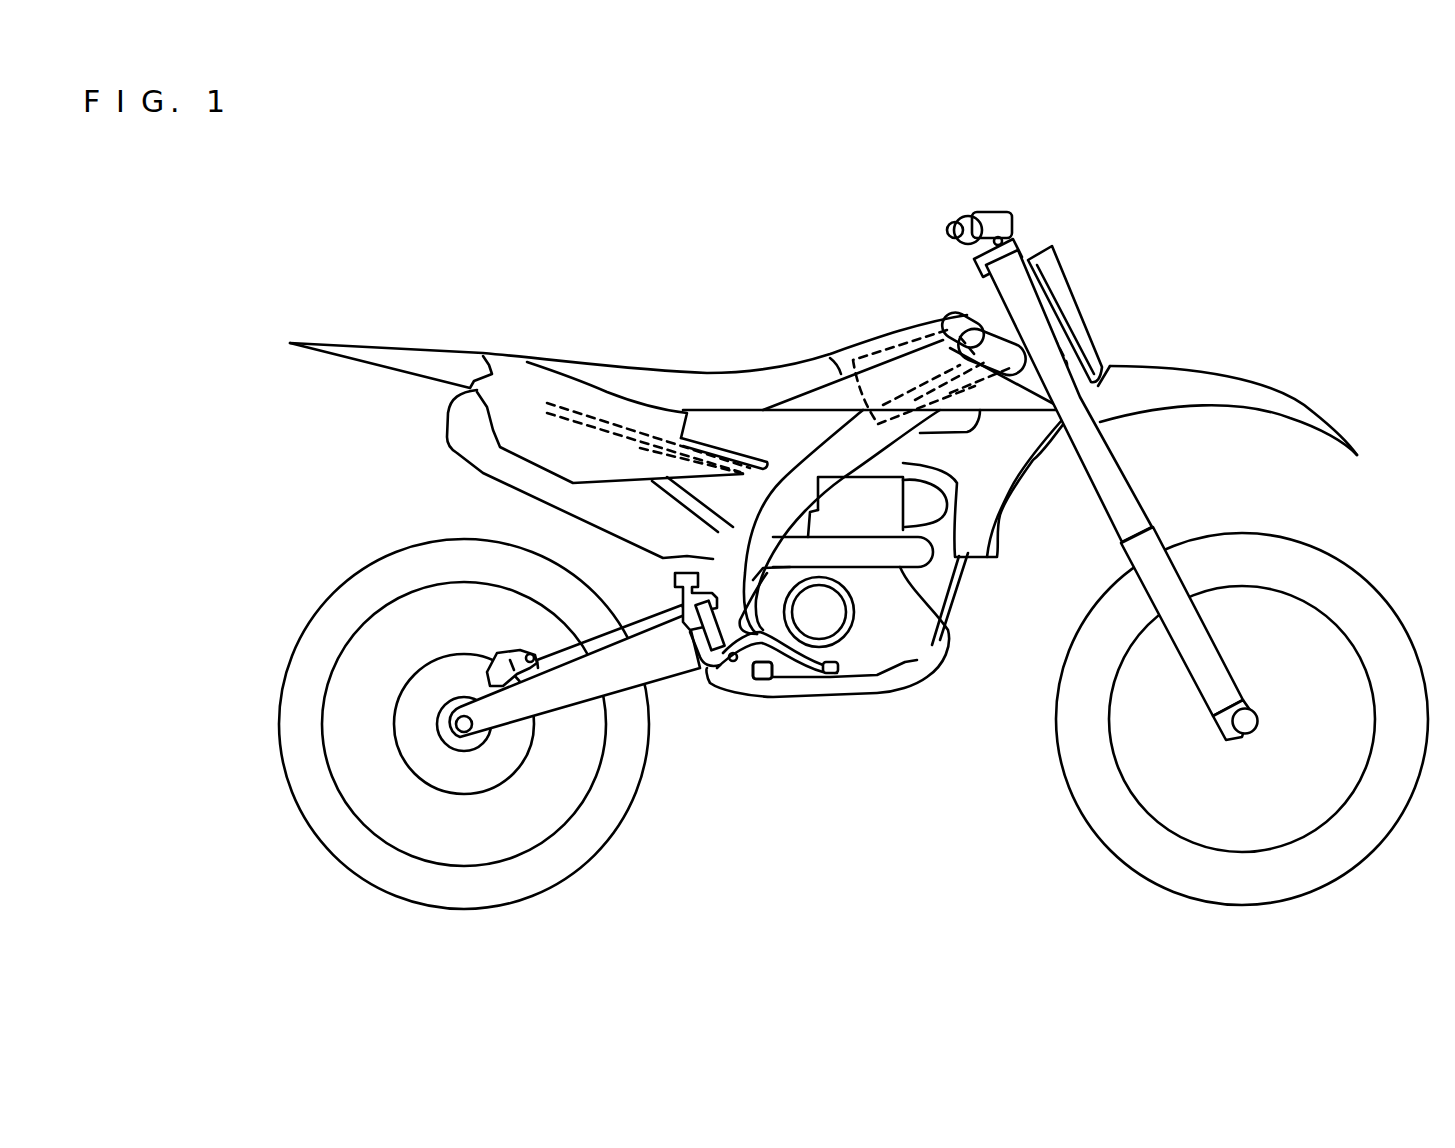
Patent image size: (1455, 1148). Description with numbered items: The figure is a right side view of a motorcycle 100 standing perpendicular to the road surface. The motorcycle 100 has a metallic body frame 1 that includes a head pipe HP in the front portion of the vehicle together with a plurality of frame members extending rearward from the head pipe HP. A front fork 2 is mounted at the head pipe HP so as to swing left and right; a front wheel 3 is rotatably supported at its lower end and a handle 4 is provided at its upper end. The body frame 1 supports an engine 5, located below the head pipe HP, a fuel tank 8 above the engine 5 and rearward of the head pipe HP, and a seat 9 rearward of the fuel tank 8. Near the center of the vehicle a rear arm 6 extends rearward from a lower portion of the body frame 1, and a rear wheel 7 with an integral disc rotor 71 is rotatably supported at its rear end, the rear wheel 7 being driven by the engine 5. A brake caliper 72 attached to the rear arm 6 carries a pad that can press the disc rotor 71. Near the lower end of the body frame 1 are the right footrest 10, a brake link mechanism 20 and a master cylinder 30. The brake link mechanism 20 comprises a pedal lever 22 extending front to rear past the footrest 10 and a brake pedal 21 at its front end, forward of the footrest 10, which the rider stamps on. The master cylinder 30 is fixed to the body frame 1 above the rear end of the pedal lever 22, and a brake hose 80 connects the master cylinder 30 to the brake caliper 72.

The motorcycle 100 is at (328, 189).
The body frame 1 is at (842, 452).
The front fork 2 is at (1120, 500).
The front wheel 3 is at (1397, 805).
The handle 4 is at (983, 212).
The engine 5 is at (933, 640).
The rear arm 6 is at (553, 697).
The rear wheel 7 is at (315, 805).
The fuel tank 8 is at (888, 362).
The seat 9 is at (602, 382).
The footrest 10 is at (762, 677).
The brake link mechanism 20 is at (803, 783).
The brake pedal 21 is at (838, 673).
The pedal lever 22 is at (793, 667).
The master cylinder 30 is at (680, 615).
The disc rotor 71 is at (410, 718).
The brake caliper 72 is at (507, 650).
The brake hose 80 is at (640, 630).
The head pipe HP is at (1043, 307).